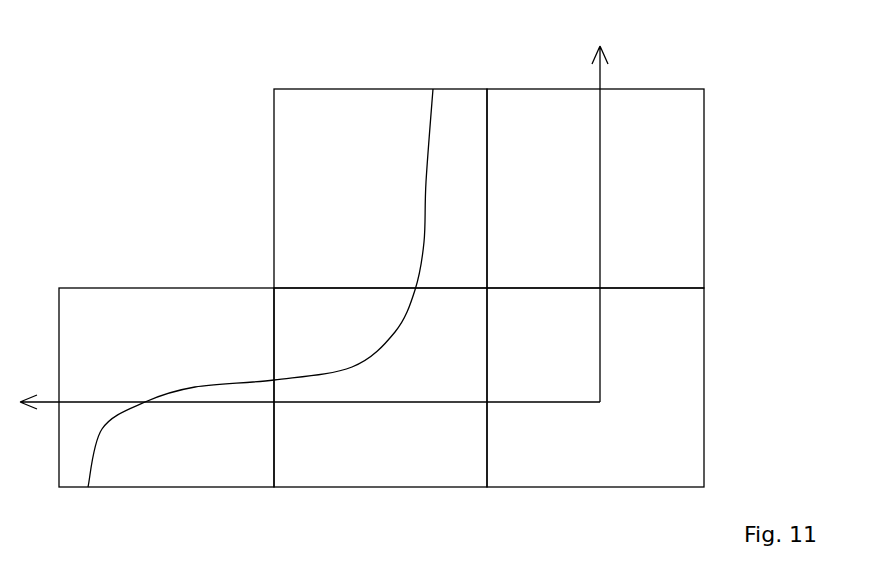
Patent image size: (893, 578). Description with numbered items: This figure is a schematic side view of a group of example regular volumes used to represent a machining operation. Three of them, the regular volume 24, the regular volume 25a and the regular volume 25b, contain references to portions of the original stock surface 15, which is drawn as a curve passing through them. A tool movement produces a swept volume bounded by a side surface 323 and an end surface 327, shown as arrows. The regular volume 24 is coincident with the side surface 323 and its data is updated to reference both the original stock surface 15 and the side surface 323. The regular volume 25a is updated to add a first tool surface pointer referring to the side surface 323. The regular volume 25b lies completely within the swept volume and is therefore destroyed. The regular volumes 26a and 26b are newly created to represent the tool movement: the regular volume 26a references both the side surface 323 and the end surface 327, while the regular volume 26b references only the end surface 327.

The original stock surface 15 is at (424, 183).
The regular volume 24 is at (146, 487).
The regular volume 25a is at (362, 487).
The regular volume 25b is at (310, 86).
The regular volume 26a is at (572, 487).
The regular volume 26b is at (548, 86).
The side surface 323 is at (103, 398).
The end surface 327 is at (600, 175).